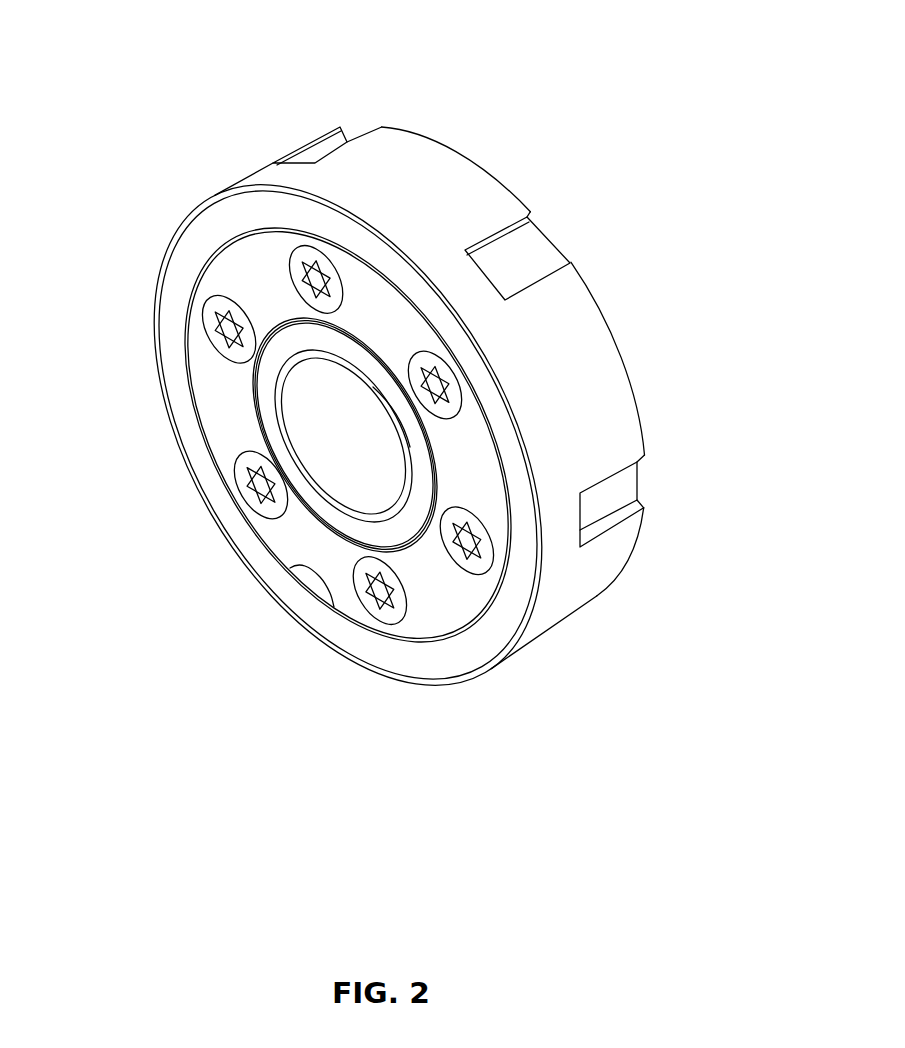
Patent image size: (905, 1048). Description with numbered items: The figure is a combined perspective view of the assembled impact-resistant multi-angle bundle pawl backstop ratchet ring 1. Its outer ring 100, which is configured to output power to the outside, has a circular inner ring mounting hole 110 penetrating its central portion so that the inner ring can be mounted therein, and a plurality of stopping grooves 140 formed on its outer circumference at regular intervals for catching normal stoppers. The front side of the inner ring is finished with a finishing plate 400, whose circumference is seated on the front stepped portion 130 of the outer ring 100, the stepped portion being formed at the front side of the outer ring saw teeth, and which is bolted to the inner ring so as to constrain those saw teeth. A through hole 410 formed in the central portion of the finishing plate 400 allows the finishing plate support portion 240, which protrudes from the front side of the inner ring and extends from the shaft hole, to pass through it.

The impact-resistant multi-angle bundle pawl backstop ratchet ring 1 is at (108, 92).
The outer ring 100 is at (437, 167).
The inner ring mounting hole 110 is at (332, 418).
The front stepped portion 130 is at (290, 568).
The stopping groove 140 is at (608, 507).
The finishing plate support portion 240 is at (402, 528).
The finishing plate 400 is at (245, 277).
The through hole 410 is at (347, 533).